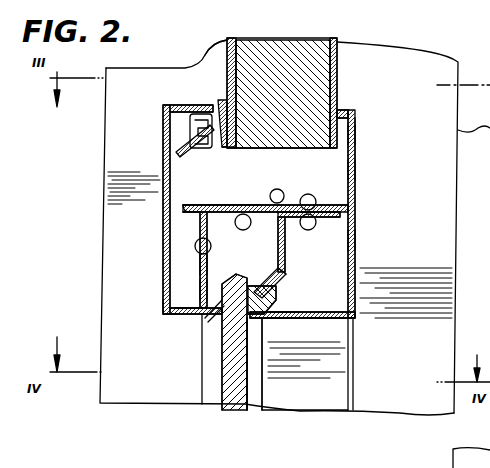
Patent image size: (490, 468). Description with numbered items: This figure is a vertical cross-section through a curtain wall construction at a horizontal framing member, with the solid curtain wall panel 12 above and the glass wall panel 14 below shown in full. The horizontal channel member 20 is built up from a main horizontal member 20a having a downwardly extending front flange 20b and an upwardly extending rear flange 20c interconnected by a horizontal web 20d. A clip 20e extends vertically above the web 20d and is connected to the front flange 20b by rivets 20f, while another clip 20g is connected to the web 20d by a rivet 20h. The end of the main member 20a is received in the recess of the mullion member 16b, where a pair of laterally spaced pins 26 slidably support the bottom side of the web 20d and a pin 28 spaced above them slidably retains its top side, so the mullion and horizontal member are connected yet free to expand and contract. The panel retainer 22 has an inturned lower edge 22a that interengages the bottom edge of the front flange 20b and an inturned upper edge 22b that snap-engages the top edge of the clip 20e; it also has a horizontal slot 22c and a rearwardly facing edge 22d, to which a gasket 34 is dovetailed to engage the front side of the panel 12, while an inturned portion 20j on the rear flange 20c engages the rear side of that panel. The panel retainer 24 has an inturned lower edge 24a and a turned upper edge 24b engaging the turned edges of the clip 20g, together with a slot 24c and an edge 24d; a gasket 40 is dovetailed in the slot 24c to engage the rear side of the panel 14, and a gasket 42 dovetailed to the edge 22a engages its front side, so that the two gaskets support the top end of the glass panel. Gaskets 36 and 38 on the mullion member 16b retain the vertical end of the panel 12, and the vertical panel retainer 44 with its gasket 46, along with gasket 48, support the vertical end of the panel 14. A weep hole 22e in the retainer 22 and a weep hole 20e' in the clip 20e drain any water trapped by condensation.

The solid curtain wall panel 12 is at (326, 89).
The glass wall panel 14 is at (222, 376).
The mullion member 16b is at (105, 140).
The horizontal channel member 20 is at (249, 206).
The main horizontal member 20a is at (354, 170).
The front flange 20b is at (200, 282).
The rear flange 20c is at (355, 135).
The horizontal web 20d is at (222, 204).
The clip 20e is at (159, 265).
The weep hole 20e' is at (128, 214).
The rivets 20f is at (194, 248).
The clip 20g is at (290, 236).
The rivet 20h is at (318, 188).
The inturned portion 20j is at (352, 110).
The panel retainer 22 is at (163, 218).
The inturned lower edge 22a is at (200, 300).
The inturned upper edge 22b is at (190, 152).
The horizontal slot 22c is at (192, 125).
The rearwardly facing edge 22d is at (240, 146).
The weep hole 22e is at (170, 318).
The panel retainer 24 is at (345, 302).
The inturned lower edge 24a is at (262, 282).
The turned upper edge 24b is at (355, 213).
The elongated slot 24c is at (278, 320).
The elongated edge 24d is at (262, 350).
The pins 26 is at (251, 230).
The pin 28 is at (284, 189).
The gasket 34 is at (213, 100).
The gasket 36 is at (212, 45).
The gasket 38 is at (355, 73).
The gasket 40 is at (270, 272).
The gasket 42 is at (203, 327).
The vertical panel retainer 44 is at (335, 408).
The vertical gasket 46 is at (257, 407).
The vertical gasket 48 is at (205, 400).